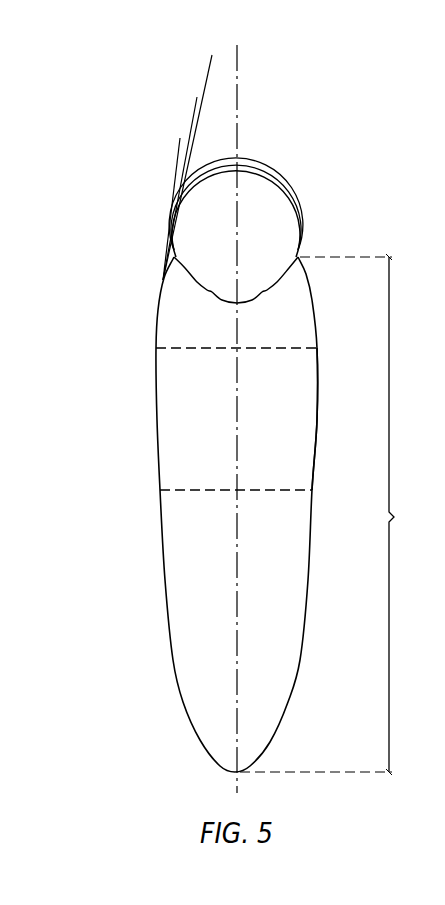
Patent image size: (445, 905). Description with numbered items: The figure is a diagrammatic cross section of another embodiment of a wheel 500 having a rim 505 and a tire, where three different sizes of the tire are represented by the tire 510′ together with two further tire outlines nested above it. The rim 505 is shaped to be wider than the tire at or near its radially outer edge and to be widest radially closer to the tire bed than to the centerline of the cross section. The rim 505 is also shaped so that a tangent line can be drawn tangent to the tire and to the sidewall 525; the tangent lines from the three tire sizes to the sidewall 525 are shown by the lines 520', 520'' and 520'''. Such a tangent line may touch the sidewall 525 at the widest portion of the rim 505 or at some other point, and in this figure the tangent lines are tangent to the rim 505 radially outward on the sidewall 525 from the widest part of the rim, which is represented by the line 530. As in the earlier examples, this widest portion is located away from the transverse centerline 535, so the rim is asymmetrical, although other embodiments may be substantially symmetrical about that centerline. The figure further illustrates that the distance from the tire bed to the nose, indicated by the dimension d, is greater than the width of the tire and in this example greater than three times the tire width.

The wheel 500 is at (372, 101).
The rim 505 is at (166, 422).
The tire 510′ is at (291, 231).
The tangent line 520' is at (143, 206).
The tangent line 520'' is at (157, 185).
The tangent line 520''' is at (171, 164).
The sidewall 525 is at (318, 420).
The line 530 is at (260, 350).
The transverse centerline 535 is at (260, 492).
The length dimension d is at (326, 514).